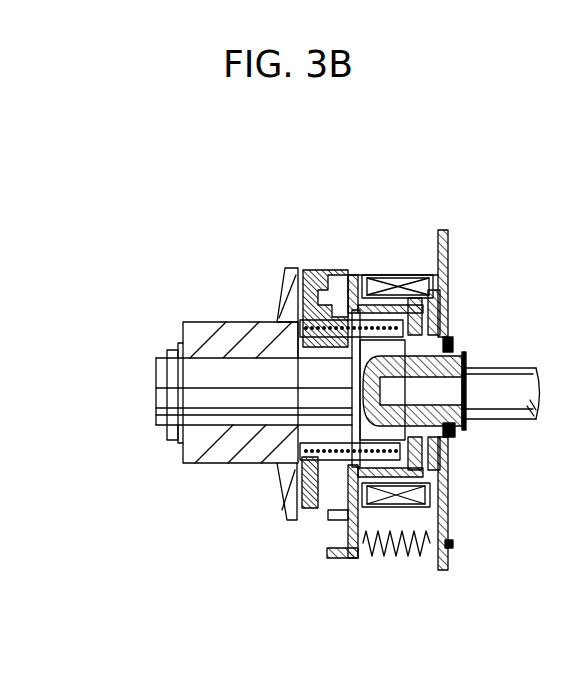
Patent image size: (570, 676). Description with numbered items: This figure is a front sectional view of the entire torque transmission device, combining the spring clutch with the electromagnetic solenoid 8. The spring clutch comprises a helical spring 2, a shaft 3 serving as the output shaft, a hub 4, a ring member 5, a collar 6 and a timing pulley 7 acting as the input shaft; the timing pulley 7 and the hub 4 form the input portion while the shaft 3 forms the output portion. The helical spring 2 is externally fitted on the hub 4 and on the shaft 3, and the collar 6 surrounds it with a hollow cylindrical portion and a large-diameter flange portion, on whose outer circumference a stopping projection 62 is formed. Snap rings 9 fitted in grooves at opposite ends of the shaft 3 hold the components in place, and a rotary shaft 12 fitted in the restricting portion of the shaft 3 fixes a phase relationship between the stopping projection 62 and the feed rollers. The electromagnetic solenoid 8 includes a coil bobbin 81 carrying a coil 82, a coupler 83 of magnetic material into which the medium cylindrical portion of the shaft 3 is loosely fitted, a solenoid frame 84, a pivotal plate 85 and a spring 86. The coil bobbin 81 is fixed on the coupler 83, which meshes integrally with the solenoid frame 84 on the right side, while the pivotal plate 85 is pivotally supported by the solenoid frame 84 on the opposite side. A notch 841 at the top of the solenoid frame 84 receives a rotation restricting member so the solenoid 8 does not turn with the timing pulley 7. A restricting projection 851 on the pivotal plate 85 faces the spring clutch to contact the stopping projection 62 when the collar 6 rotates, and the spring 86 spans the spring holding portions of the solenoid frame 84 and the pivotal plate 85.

The helical spring 2 is at (297, 330).
The shaft 3 is at (195, 368).
The hub 4 is at (273, 463).
The ring member 5 is at (457, 333).
The collar 6 is at (297, 272).
The timing pulley 7 is at (230, 463).
The electromagnetic solenoid 8 is at (410, 250).
The snap rings 9 is at (172, 350).
The rotary shaft 12 is at (522, 423).
The stopping projection 62 is at (313, 266).
The coil bobbin 81 is at (447, 472).
The coil 82 is at (392, 273).
The coupler 83 is at (447, 300).
The solenoid frame 84 is at (447, 487).
The notch 841 is at (447, 258).
The pivotal plate 85 is at (347, 560).
The spring 86 is at (402, 560).
The restricting projection 851 is at (332, 277).